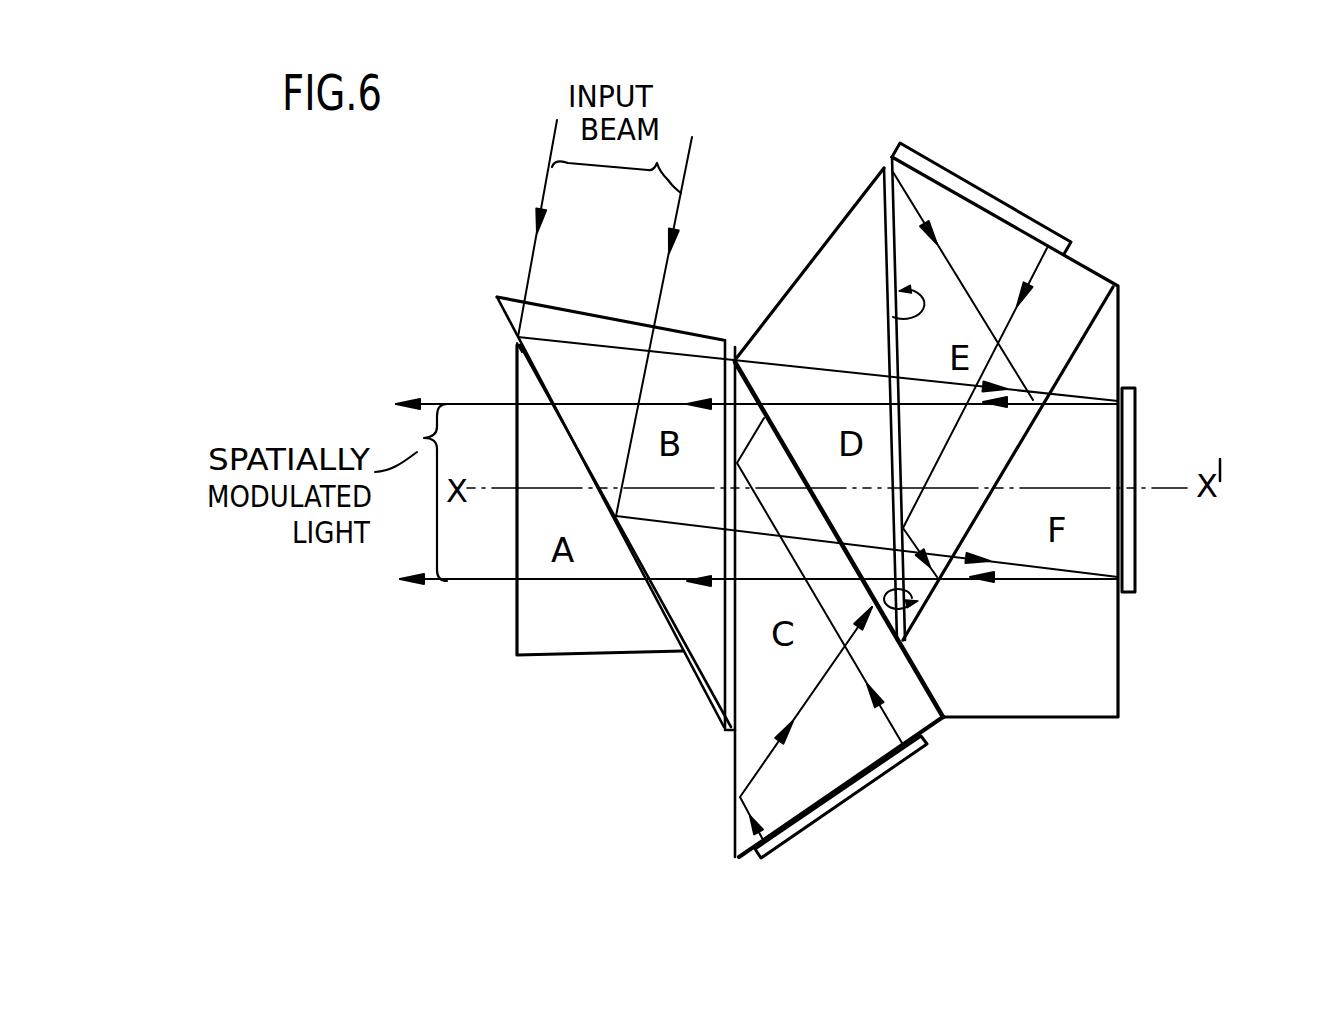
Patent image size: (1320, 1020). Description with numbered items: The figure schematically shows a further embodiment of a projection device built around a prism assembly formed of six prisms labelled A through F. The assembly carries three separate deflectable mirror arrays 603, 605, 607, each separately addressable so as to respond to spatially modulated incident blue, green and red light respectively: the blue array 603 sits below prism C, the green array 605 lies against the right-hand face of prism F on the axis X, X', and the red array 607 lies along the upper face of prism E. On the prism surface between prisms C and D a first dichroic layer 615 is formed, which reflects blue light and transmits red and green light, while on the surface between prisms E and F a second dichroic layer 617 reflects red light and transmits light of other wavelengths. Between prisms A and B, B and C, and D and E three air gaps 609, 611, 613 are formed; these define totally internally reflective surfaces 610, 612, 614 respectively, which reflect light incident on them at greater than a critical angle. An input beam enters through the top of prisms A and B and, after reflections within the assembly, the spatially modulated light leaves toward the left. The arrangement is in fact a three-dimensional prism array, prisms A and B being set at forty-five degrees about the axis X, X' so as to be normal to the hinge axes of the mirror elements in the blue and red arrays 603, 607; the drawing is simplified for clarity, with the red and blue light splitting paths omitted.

The deflectable mirror array 603 is at (855, 797).
The deflectable mirror array 605 is at (1127, 523).
The deflectable mirror array 607 is at (1017, 208).
The air gap 609 is at (525, 368).
The totally internally reflective surface 610 is at (556, 366).
The air gap 611 is at (737, 659).
The totally internally reflective surface 612 is at (752, 680).
The air gap 613 is at (886, 238).
The totally internally reflective surface 614 is at (893, 317).
The first dichroic layer 615 is at (874, 612).
The second dichroic layer 617 is at (915, 604).